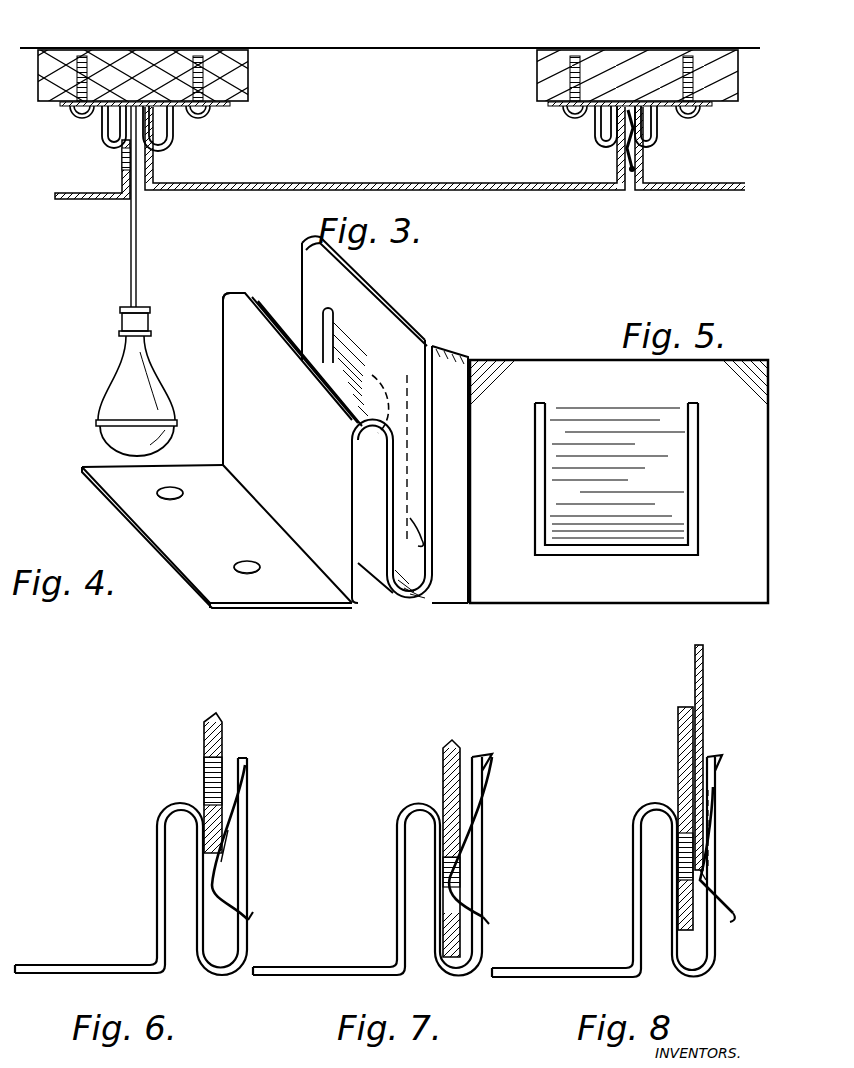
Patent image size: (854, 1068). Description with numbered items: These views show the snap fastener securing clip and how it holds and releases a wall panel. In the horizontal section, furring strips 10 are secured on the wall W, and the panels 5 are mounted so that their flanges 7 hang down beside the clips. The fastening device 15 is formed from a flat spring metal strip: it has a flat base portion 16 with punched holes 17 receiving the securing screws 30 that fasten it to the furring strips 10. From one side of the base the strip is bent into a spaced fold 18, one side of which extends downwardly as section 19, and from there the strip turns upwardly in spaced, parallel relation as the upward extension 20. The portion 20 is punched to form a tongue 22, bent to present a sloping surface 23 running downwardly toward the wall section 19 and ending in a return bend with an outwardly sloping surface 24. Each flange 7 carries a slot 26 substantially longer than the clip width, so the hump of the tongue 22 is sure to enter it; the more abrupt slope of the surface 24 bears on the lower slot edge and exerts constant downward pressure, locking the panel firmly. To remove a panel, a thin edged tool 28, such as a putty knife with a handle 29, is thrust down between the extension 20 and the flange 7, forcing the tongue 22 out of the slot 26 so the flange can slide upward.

In FIG. 3, the wall W is at (410, 49).
In FIG. 3, the ceiling panel 5 is at (528, 182).
In FIG. 3, the panel flange 7 is at (616, 154).
In FIG. 6, the panel flange 7 is at (223, 723).
In FIG. 7, the panel flange 7 is at (447, 752).
In FIG. 8, the panel flange 7 is at (671, 739).
In FIG. 3, the furring strip 10 is at (251, 68).
In FIG. 3, the fastening device 15 is at (101, 134).
In FIG. 4, the fastening device 15 is at (226, 307).
In FIG. 4, the base portion 16 is at (217, 536).
In FIG. 6, the base portion 16 is at (68, 964).
In FIG. 7, the base portion 16 is at (355, 968).
In FIG. 8, the base portion 16 is at (598, 966).
In FIG. 4, the punched holes 17 is at (262, 569).
In FIG. 4, the spaced fold 18 is at (292, 448).
In FIG. 7, the spaced fold 18 is at (397, 848).
In FIG. 4, the downwardly extending section 19 is at (393, 549).
In FIG. 6, the downwardly extending section 19 is at (198, 921).
In FIG. 7, the downwardly extending section 19 is at (442, 941).
In FIG. 3, the upward extension 20 is at (626, 172).
In FIG. 4, the upward extension 20 is at (437, 388).
In FIG. 5, the upward extension 20 is at (619, 481).
In FIG. 6, the upward extension 20 is at (250, 798).
In FIG. 7, the upward extension 20 is at (483, 857).
In FIG. 4, the tongue 22 is at (373, 478).
In FIG. 5, the tongue 22 is at (690, 447).
In FIG. 6, the tongue 22 is at (225, 887).
In FIG. 7, the tongue 22 is at (455, 885).
In FIG. 8, the tongue 22 is at (700, 888).
In FIG. 4, the sloping surface 23 is at (382, 425).
In FIG. 6, the sloping surface 23 is at (217, 866).
In FIG. 8, the sloping surface 23 is at (698, 876).
In FIG. 4, the outwardly sloping surface 24 is at (422, 543).
In FIG. 5, the outwardly sloping surface 24 is at (612, 554).
In FIG. 6, the outwardly sloping surface 24 is at (249, 921).
In FIG. 7, the outwardly sloping surface 24 is at (457, 910).
In FIG. 8, the outwardly sloping surface 24 is at (731, 921).
In FIG. 3, the slot 26 is at (121, 157).
In FIG. 6, the slot 26 is at (206, 770).
In FIG. 7, the slot 26 is at (443, 843).
In FIG. 8, the slot 26 is at (683, 842).
In FIG. 3, the thin edged tool 28 is at (137, 207).
In FIG. 8, the thin edged tool 28 is at (703, 708).
In FIG. 3, the handle 29 is at (125, 375).
In FIG. 4, the handle 29 is at (374, 306).
In FIG. 3, the securing screws 30 is at (78, 114).